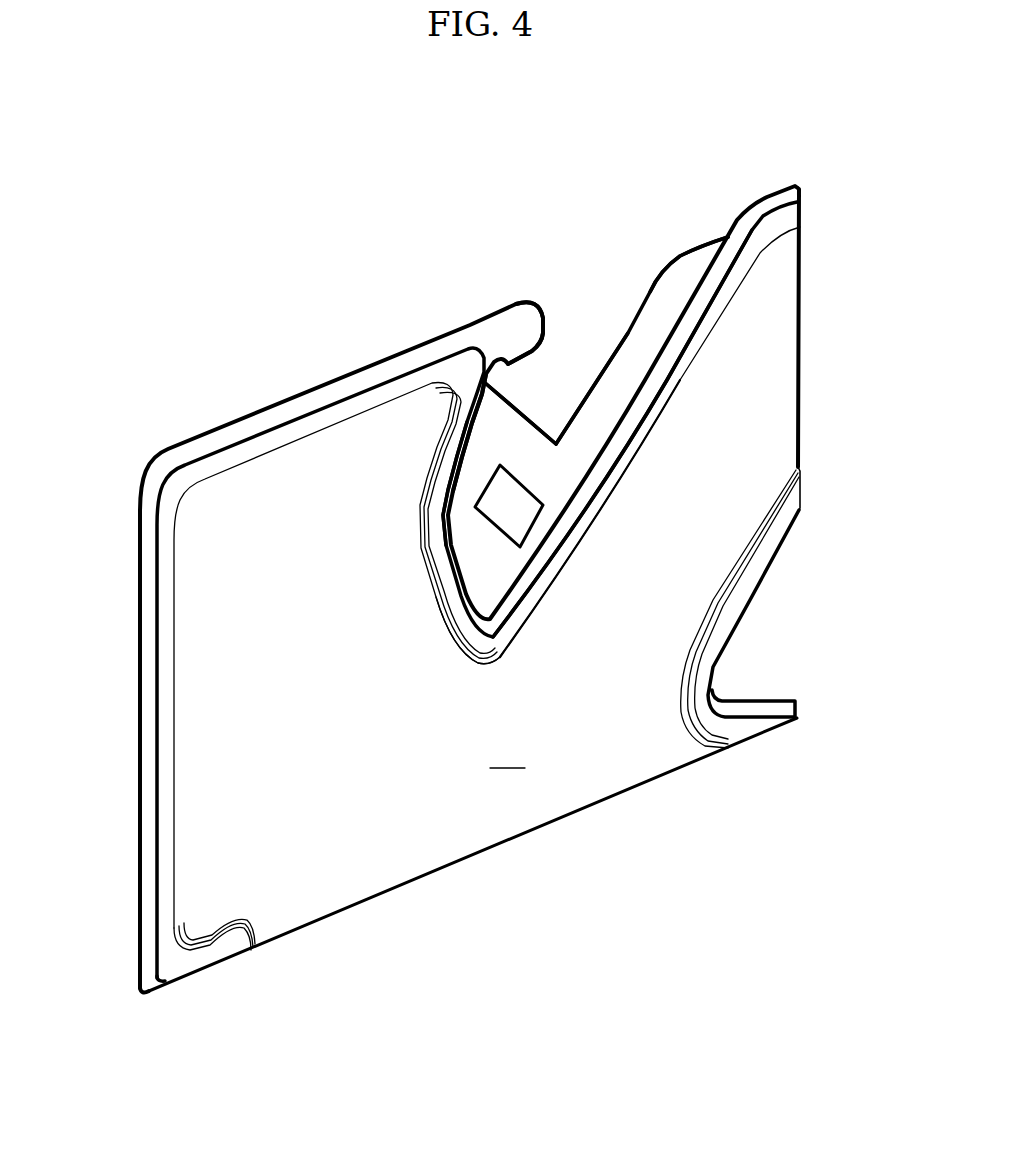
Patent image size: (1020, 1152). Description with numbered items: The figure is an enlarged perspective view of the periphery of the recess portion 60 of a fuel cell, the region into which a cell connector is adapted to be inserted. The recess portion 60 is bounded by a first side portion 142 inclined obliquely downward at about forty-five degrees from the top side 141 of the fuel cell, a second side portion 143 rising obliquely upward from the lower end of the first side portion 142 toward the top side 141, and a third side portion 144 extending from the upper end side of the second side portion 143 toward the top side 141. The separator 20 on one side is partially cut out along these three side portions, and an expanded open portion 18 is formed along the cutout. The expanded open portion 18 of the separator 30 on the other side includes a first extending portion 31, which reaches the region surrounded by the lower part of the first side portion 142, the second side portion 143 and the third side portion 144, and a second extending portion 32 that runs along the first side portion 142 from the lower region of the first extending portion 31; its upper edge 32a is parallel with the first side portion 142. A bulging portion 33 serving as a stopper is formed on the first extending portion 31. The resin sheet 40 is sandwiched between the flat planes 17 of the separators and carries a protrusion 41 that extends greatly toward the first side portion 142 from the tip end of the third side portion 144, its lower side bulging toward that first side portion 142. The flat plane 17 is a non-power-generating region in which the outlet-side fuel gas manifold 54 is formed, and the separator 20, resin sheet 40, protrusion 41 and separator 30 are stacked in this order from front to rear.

The flat plane 17 is at (645, 478).
The expanded open portion 18 is at (165, 637).
The separator 20 is at (440, 816).
The separator 30 is at (647, 291).
The first extending portion 31 is at (480, 463).
The second extending portion 32 is at (687, 272).
The upper edge 32a is at (600, 355).
The bulging portion 33 is at (503, 500).
The resin sheet 40 is at (289, 408).
The protrusion 41 is at (522, 327).
The outlet-side fuel gas manifold 54 is at (760, 655).
The recess portion 60 is at (541, 396).
The top side 141 is at (371, 346).
The first side portion 142 is at (662, 355).
The second side portion 143 is at (477, 602).
The third side portion 144 is at (484, 415).